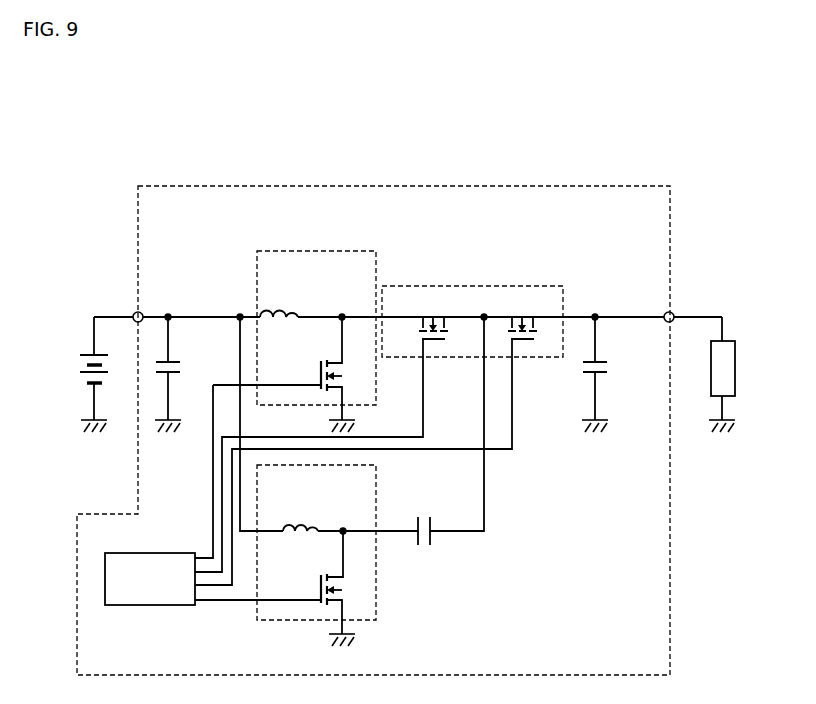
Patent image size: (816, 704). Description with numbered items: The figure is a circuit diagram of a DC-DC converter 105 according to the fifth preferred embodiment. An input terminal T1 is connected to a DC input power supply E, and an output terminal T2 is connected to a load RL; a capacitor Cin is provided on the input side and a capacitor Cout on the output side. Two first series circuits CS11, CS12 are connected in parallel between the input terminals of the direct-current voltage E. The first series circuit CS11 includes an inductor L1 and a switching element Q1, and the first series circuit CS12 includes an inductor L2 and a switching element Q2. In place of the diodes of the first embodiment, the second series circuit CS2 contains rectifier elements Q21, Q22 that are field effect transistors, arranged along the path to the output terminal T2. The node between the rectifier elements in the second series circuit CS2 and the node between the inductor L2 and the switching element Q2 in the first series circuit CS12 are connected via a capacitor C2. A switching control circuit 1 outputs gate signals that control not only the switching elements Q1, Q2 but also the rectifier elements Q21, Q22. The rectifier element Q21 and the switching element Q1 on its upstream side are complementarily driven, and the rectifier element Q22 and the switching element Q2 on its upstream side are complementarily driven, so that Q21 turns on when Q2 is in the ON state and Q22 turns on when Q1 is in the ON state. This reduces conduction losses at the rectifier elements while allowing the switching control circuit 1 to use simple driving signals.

The DC-DC converter 105 is at (672, 185).
The switching control circuit 1 is at (160, 553).
The input terminal T1 is at (125, 308).
The output terminal T2 is at (680, 308).
The DC input power supply E is at (82, 374).
The capacitor on input side Cin is at (183, 374).
The capacitor on output side Cout is at (615, 374).
The load RL is at (737, 368).
The first series circuit CS11 is at (355, 250).
The first series circuit CS12 is at (377, 489).
The second series circuit CS2 is at (467, 285).
The inductor L1 is at (279, 302).
The inductor L2 is at (300, 519).
The switching element Q1 is at (284, 374).
The switching element Q2 is at (275, 588).
The rectifier element Q21 is at (321, 433).
The rectifier element Q22 is at (366, 439).
The capacitor C2 is at (423, 517).